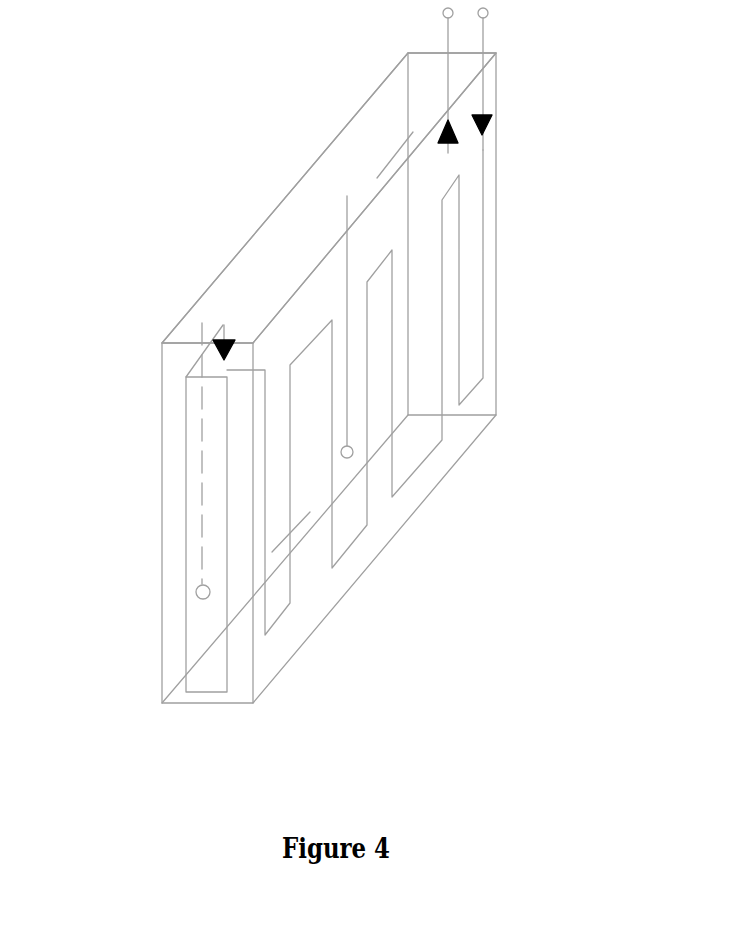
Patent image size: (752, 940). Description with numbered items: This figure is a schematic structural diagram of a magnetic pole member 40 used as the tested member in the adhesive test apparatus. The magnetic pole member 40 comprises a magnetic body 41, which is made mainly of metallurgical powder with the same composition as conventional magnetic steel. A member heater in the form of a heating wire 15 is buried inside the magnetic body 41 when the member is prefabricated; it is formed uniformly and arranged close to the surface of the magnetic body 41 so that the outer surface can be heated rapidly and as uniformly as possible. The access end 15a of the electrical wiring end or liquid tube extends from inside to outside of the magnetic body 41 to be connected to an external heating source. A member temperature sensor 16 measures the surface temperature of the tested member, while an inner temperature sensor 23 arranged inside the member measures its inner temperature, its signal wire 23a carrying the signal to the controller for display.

The magnetic pole member 40 is at (285, 172).
The magnetic body 41 is at (319, 198).
The heating wire 15 is at (377, 421).
The access end of an electric wiring end or a liquid pipe 15a is at (450, 18).
The member temperature sensor 16 is at (424, 388).
The inner temperature sensor 23 is at (278, 647).
The signal wire 23a is at (117, 453).